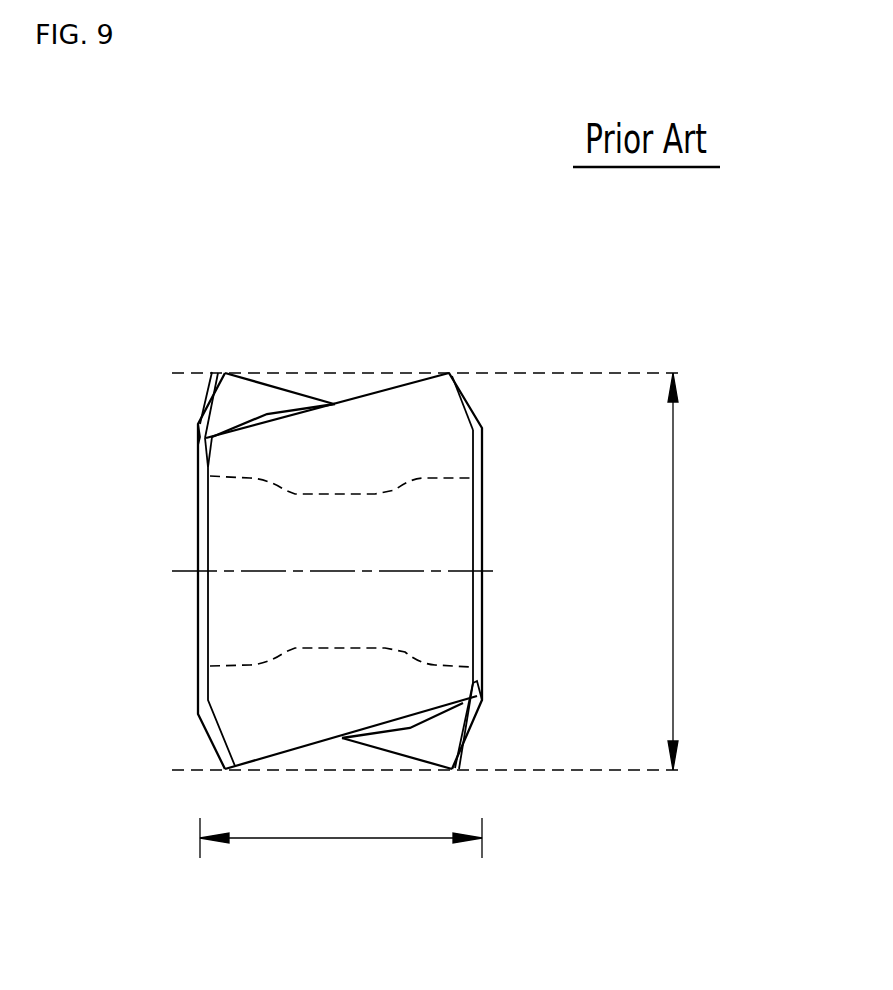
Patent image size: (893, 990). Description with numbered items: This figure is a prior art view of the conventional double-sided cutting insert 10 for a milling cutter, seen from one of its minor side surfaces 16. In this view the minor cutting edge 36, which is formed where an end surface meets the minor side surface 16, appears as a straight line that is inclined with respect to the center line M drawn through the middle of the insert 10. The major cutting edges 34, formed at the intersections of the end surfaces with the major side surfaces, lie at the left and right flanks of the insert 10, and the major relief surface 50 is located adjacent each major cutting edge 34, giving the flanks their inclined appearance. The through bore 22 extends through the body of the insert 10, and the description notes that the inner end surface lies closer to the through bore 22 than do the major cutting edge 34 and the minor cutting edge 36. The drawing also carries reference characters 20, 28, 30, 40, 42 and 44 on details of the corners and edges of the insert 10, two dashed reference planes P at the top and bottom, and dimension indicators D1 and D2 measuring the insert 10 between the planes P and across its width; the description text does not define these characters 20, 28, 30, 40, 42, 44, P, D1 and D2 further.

The double-sided cutting insert 10 is at (618, 260).
The minor side surface 16 is at (433, 527).
The side face 20 is at (200, 518).
The through bore 22 is at (228, 660).
The corner 28 is at (224, 372).
The cutting edge tip 30 is at (197, 431).
The major cutting edge 34 is at (202, 418).
The minor cutting edge 36 is at (297, 392).
The corner cutting edge 40 is at (220, 392).
The nose 42 is at (203, 437).
The chip breaker land 44 is at (240, 400).
The major relief surface 50 is at (198, 424).
The reference plane P is at (628, 372).
The center line M is at (478, 571).
The height dimension D1 is at (696, 571).
The width dimension D2 is at (341, 833).